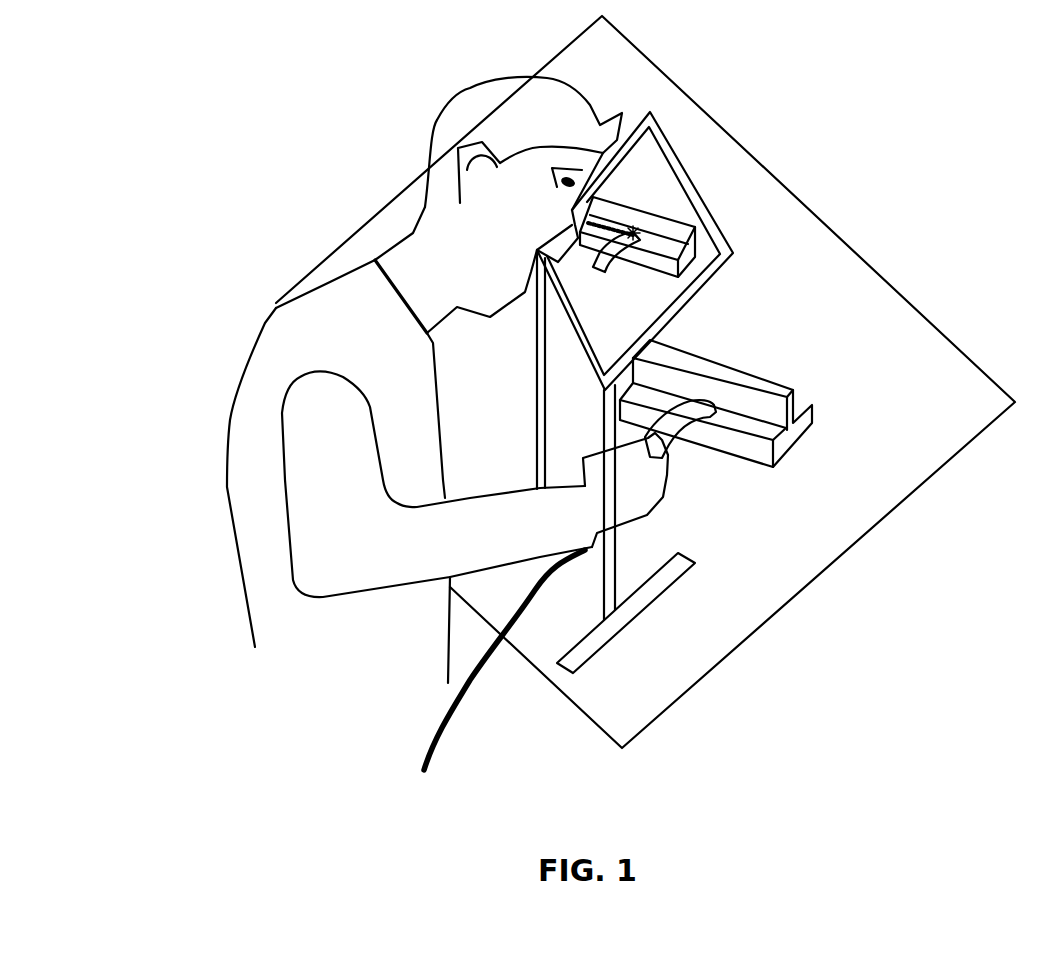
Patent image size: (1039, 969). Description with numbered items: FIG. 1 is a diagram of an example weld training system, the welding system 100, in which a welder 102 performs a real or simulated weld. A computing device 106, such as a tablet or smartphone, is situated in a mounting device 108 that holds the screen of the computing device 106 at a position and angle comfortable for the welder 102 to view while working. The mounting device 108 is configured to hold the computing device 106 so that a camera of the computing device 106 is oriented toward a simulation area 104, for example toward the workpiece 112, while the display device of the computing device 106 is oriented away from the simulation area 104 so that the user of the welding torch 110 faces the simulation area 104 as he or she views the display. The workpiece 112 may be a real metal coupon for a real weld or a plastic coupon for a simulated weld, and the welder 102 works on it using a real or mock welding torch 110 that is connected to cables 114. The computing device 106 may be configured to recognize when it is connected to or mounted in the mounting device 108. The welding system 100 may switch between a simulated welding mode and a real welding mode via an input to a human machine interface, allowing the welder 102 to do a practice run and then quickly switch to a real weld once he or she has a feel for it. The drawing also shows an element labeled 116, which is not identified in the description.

The welding system 100 is at (110, 78).
The welder 102 is at (250, 357).
The simulation area 104 is at (780, 158).
The computing device 106 is at (730, 212).
The mounting device 108 is at (548, 402).
The welding torch 110 is at (672, 447).
The workpiece 112 is at (772, 364).
The cables 114 is at (437, 735).
The cartridge / inserted test strip 116 is at (600, 278).